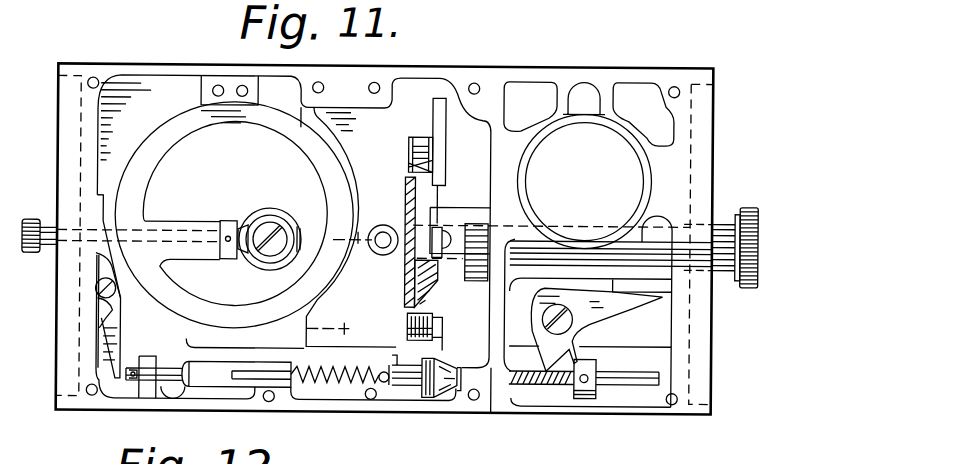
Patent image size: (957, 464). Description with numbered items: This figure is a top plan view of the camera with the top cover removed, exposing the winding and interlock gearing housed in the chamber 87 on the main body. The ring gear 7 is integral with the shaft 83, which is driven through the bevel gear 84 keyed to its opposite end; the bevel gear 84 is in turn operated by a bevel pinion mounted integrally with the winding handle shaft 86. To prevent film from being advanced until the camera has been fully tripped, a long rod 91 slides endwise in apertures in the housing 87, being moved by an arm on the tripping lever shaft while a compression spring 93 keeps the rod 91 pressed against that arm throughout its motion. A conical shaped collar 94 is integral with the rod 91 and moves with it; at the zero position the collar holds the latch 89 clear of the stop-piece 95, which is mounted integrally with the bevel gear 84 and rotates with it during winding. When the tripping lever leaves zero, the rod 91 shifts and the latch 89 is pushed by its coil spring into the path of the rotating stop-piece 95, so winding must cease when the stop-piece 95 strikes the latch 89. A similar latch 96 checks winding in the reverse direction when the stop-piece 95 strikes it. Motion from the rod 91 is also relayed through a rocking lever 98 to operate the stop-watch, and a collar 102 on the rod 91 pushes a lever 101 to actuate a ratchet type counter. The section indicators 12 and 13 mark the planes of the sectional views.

The chamber 87 is at (684, 76).
The latch 96 is at (440, 100).
The stop-piece 95 is at (437, 243).
The bevel gear 84 is at (405, 278).
The conical shaped collar 94 is at (440, 386).
The latch 89 is at (443, 337).
The shaft 83 is at (655, 243).
The gear 7 is at (758, 246).
The lever 101 is at (627, 303).
The compression spring 93 is at (549, 388).
The collar 102 is at (590, 398).
The rod 91 is at (656, 385).
The rocking lever 98 is at (113, 332).
The section line 13- 13 is at (45, 325).
The section line 12- 12 is at (57, 392).
The winding handle shaft 86 is at (334, 456).